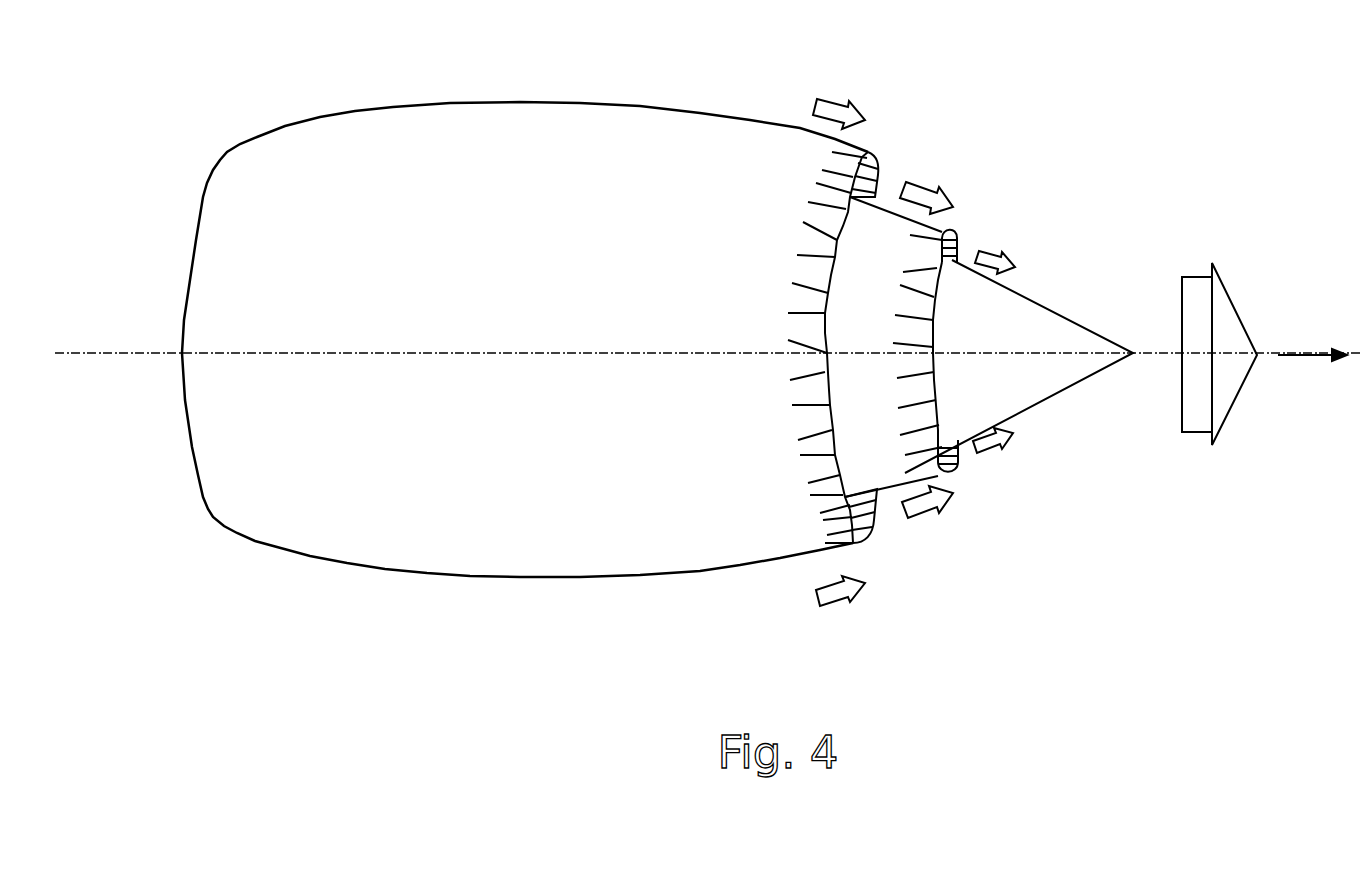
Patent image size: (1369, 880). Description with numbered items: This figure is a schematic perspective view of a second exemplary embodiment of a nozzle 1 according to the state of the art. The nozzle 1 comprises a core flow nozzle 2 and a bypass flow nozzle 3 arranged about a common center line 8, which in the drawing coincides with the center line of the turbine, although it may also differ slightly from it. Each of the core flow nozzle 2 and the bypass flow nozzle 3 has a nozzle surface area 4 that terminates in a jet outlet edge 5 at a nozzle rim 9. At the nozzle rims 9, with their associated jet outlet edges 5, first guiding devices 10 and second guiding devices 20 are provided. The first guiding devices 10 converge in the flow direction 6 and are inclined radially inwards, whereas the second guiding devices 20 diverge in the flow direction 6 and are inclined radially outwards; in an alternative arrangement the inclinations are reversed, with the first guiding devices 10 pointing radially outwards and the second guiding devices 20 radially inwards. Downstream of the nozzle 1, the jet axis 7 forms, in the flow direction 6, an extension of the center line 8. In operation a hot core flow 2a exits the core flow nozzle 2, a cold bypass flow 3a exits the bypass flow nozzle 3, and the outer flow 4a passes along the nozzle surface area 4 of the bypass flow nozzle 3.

The nozzle 1 is at (498, 82).
The core flow nozzle 2 is at (880, 205).
The hot core flow 2a is at (988, 254).
The bypass flow nozzle 3 is at (756, 117).
The cold bypass flow 3a is at (933, 184).
The nozzle surface area 4 is at (753, 168).
The outer flow 4a is at (833, 98).
The jet outlet edge 5 is at (867, 150).
The flow direction 6 is at (1312, 343).
The jet axis 7 is at (1257, 338).
The center line 8 is at (398, 353).
The nozzle rim 9 is at (861, 549).
The first guiding devices 10 is at (807, 240).
The second guiding devices 20 is at (807, 278).